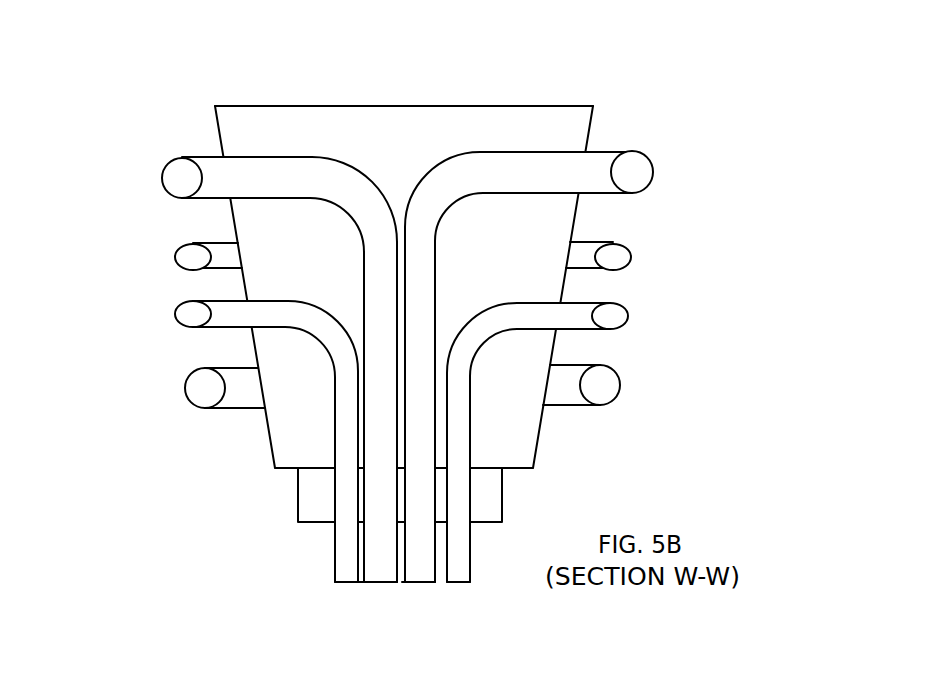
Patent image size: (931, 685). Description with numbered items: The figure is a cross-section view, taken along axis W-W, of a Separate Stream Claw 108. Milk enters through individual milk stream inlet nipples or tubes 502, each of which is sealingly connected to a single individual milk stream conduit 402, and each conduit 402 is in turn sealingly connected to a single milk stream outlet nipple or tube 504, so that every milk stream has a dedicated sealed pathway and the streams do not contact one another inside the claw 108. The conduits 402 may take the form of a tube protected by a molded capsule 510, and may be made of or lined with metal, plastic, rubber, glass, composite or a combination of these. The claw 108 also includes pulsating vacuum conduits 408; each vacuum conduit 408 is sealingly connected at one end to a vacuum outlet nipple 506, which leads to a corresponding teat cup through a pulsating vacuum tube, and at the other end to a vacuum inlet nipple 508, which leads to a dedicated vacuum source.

The Separate Stream Claw 108 is at (546, 78).
The individual milk stream conduit 402 is at (382, 303).
The pulsating vacuum conduit 408 is at (265, 300).
The milk stream inlet nipple 502 is at (210, 157).
The milk stream outlet nipple 504 is at (422, 583).
The vacuum outlet nipple 506 is at (177, 314).
The vacuum inlet nipple 508 is at (335, 555).
The molded capsule 510 is at (415, 105).